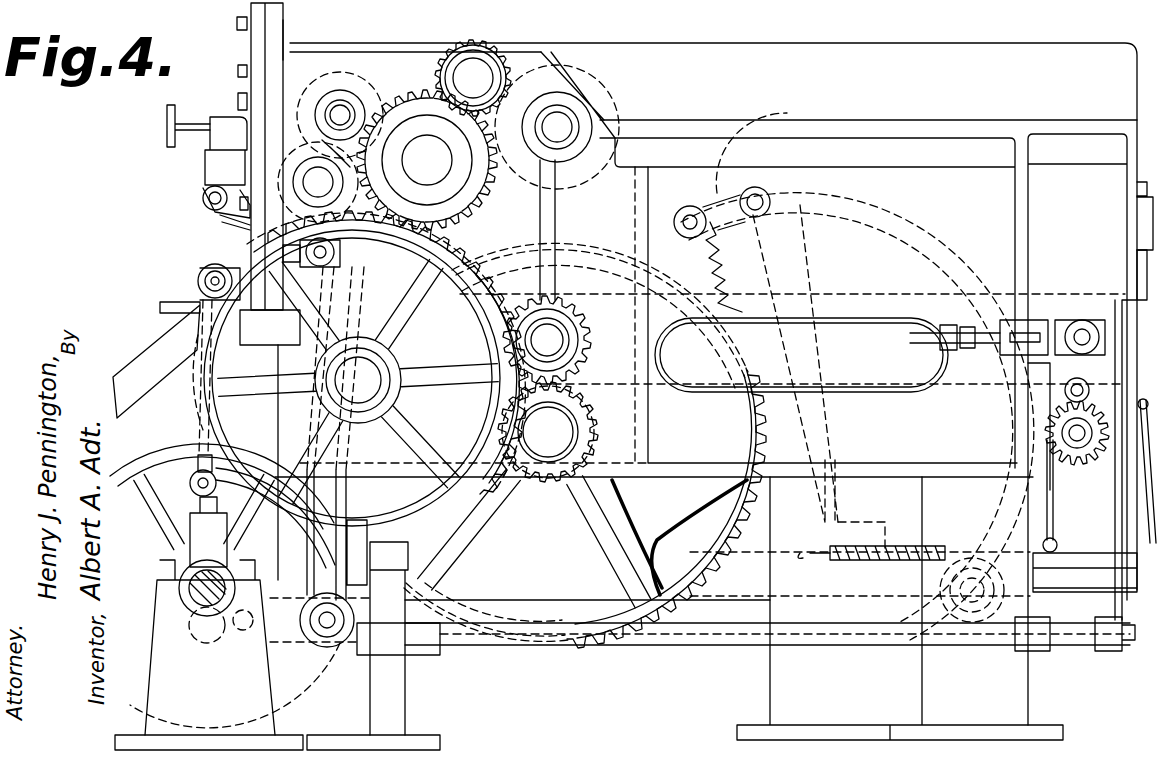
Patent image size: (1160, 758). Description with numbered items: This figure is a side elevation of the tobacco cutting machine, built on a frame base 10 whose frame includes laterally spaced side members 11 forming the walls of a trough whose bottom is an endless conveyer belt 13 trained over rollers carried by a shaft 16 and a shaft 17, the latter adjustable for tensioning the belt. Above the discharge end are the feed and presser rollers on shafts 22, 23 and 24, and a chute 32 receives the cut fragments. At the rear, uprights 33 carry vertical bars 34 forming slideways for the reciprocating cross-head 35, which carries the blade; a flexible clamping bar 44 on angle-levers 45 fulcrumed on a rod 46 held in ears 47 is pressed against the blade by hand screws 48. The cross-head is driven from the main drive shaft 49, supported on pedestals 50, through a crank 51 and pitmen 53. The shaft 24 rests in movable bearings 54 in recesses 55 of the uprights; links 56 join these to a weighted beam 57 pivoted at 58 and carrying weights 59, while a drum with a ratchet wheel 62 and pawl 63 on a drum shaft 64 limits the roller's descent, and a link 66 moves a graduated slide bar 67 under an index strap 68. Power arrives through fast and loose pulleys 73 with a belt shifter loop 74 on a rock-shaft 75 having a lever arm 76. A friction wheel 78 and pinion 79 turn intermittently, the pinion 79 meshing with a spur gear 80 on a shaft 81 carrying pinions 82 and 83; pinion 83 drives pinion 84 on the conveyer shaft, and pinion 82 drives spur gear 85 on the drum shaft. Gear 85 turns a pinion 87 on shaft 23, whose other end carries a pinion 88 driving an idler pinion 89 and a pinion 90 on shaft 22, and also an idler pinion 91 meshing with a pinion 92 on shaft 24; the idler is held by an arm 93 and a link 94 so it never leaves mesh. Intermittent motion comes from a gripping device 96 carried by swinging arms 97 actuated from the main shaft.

The frame base 10 is at (403, 695).
The side members 11 is at (706, 391).
The endless conveyer belt 13 is at (912, 262).
The shaft 16 is at (540, 338).
The shaft 17 is at (1082, 322).
The shaft 22 is at (560, 125).
The shaft 23 is at (427, 160).
The shaft 24 is at (318, 182).
The chute 32 is at (148, 350).
The uprights 33 is at (285, 32).
The vertical bars 34 is at (251, 40).
The cross-head 35 is at (197, 184).
The clamping bar 44 is at (225, 222).
The angle-levers 45 is at (210, 146).
The rod 46 is at (209, 198).
The ears 47 is at (205, 209).
The hand screws 48 is at (194, 120).
The main drive shaft 49 is at (195, 606).
The pedestals 50 is at (258, 700).
The crank 51 is at (193, 643).
The pitmen 53 is at (224, 414).
The bearings 54 is at (345, 264).
The recesses 55 is at (351, 254).
The links 56 is at (295, 338).
The weighted beam 57 is at (576, 610).
The pivot 58 is at (245, 632).
The weights 59 is at (1080, 556).
The ratchet wheel 62 is at (1070, 460).
The pawl 63 is at (1065, 392).
The drum shaft 64 is at (1062, 433).
The link 66 is at (1140, 508).
The graduated slide bar 67 is at (1137, 258).
The strap 68 is at (1135, 210).
The fast and loose pulleys 73 is at (181, 468).
The belt shifter loop 74 is at (225, 470).
The rock-shaft 75 is at (885, 648).
The lever arm 76 is at (1090, 320).
The friction wheel 78 is at (985, 497).
The pinion 79 is at (851, 355).
The spur gear 80 is at (745, 480).
The shaft 81 is at (548, 432).
The pinion 82 is at (548, 478).
The pinion 83 is at (597, 437).
The pinion 84 is at (585, 300).
The spur gear 85 is at (512, 393).
The pinion 87 is at (490, 222).
The pinion 88 is at (456, 78).
The idler pinion 89 is at (512, 48).
The pinion 90 is at (585, 70).
The idler pinion 91 is at (345, 80).
The pinion 92 is at (373, 352).
The arm 93 is at (380, 100).
The link 94 is at (292, 170).
The gripping device 96 is at (743, 167).
The swinging arms 97 is at (822, 236).